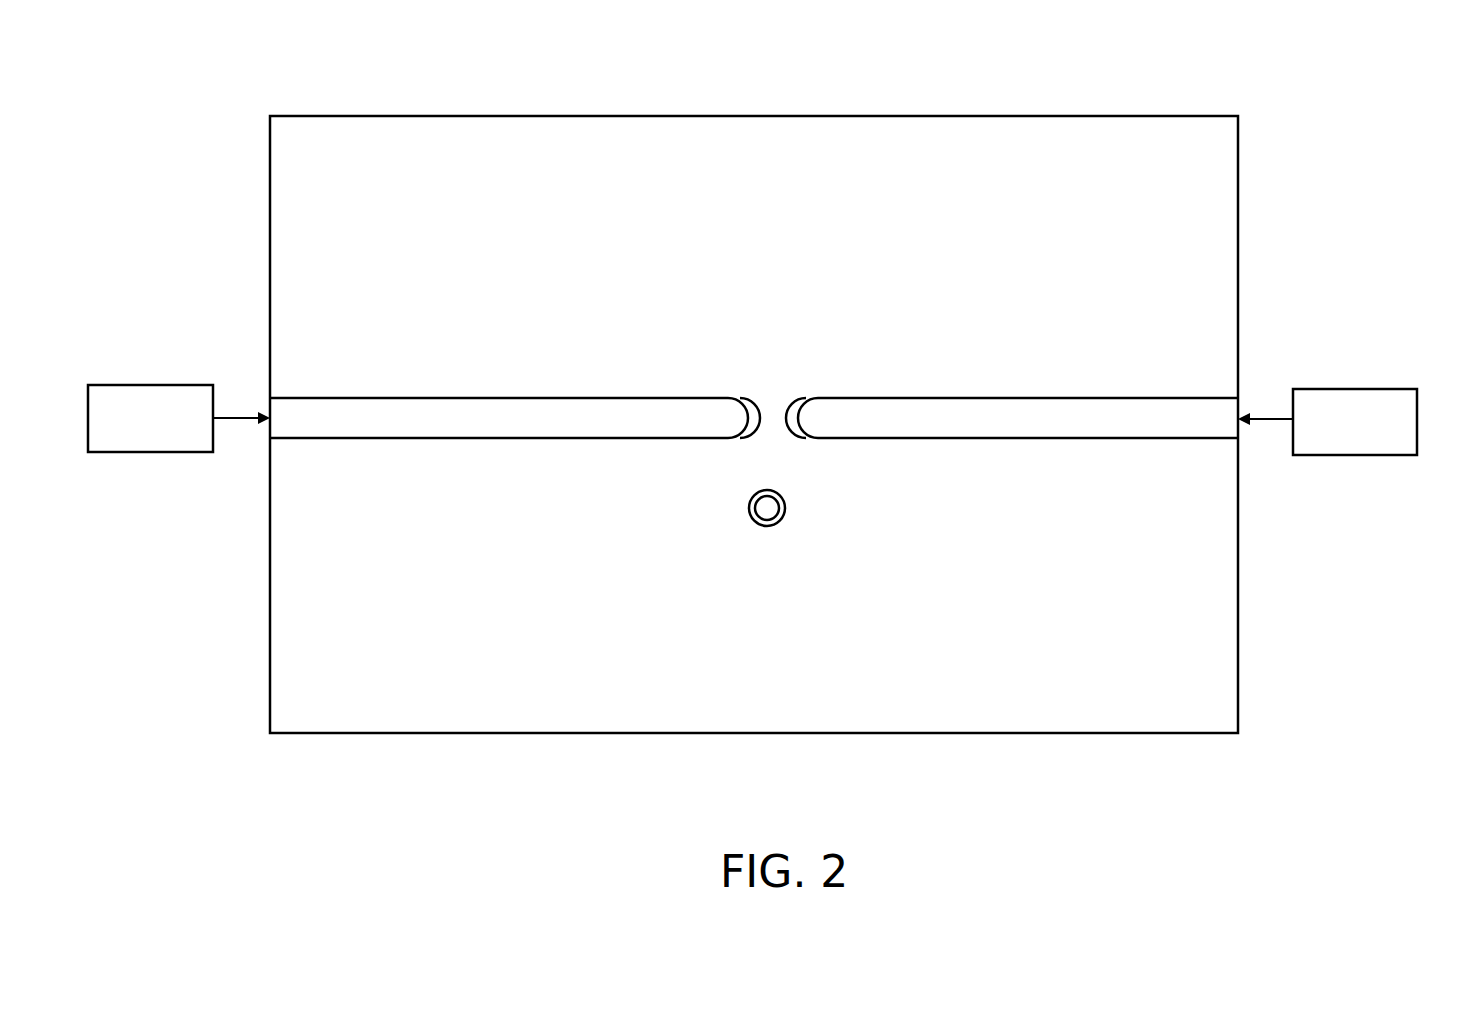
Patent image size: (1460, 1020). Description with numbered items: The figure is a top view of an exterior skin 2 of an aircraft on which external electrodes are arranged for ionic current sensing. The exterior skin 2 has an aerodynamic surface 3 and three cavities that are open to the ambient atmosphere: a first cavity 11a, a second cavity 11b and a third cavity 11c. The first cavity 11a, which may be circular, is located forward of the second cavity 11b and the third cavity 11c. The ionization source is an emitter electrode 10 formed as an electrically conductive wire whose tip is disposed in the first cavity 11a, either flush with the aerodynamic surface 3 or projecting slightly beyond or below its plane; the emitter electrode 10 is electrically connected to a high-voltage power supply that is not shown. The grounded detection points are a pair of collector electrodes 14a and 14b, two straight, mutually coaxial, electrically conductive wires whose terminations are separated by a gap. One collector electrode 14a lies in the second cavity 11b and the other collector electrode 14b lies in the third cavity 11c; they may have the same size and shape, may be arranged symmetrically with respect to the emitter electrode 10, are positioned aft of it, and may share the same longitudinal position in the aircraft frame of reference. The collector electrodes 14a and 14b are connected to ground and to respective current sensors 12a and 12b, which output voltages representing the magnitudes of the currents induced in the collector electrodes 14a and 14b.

The exterior skin 2 is at (758, 115).
The aerodynamic surface 3 is at (988, 130).
The emitter electrode 10 is at (782, 519).
The first cavity 11a is at (755, 521).
The second cavity 11b is at (620, 397).
The third cavity 11c is at (952, 397).
The current sensor 12a is at (165, 386).
The current sensor 12b is at (1372, 388).
The collector electrode 14a is at (461, 410).
The collector electrode 14b is at (1093, 410).